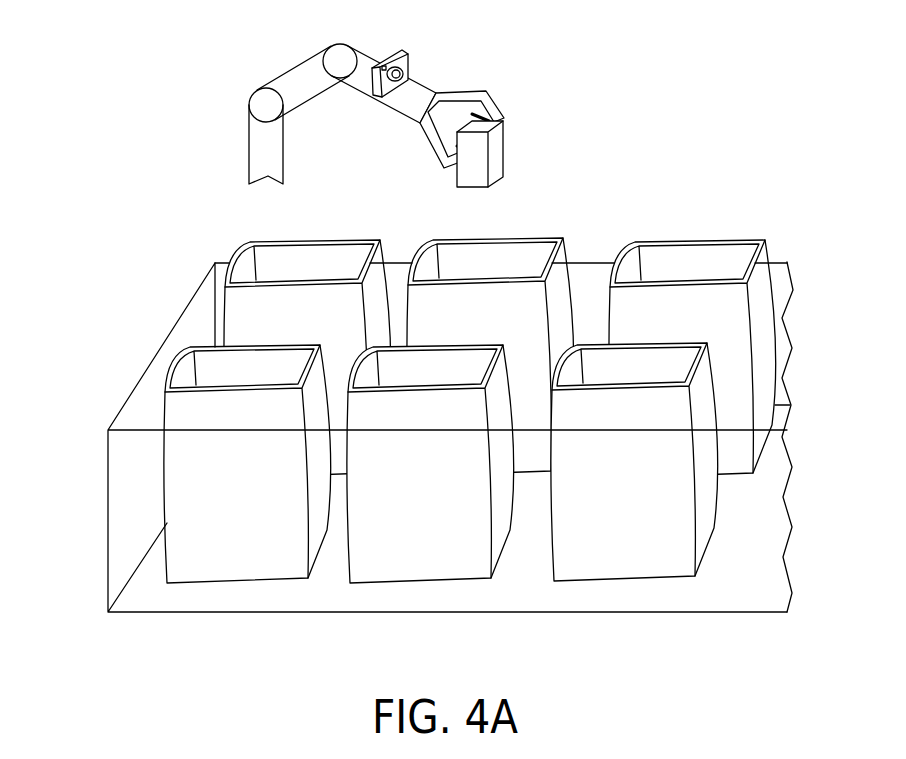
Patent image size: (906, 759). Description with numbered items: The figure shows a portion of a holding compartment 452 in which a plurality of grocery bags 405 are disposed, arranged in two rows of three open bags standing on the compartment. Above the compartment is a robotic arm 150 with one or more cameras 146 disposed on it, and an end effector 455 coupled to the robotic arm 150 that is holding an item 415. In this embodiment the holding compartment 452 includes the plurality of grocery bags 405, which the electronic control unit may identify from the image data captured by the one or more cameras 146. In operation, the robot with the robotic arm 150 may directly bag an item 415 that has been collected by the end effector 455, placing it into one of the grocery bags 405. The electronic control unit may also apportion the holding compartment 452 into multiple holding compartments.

The robotic arm 150 is at (283, 70).
The cameras 146 is at (400, 50).
The end effector 455 is at (478, 93).
The item 415 is at (505, 133).
The grocery bags 405 is at (312, 238).
The holding compartment 452 is at (108, 517).